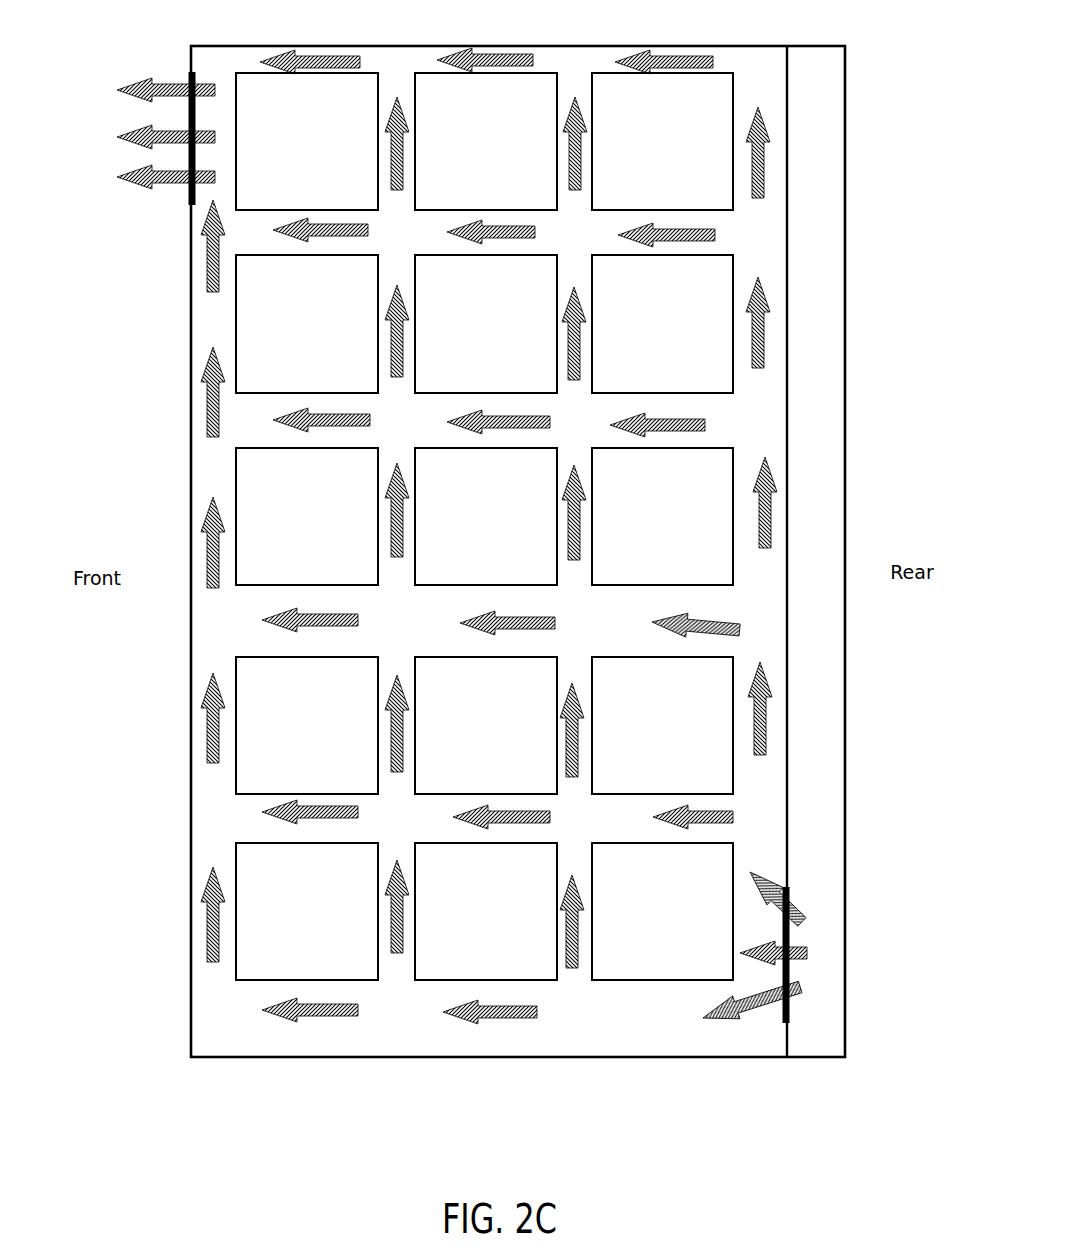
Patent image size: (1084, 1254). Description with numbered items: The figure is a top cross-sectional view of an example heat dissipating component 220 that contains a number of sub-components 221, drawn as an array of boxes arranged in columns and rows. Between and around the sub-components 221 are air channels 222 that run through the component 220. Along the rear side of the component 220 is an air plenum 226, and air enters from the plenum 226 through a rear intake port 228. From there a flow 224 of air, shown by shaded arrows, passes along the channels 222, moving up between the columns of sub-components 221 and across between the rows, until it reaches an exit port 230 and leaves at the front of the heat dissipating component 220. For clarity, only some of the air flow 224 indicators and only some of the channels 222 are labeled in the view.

The heat dissipating component 220 is at (238, 1057).
The sub-components 221 is at (484, 526).
The air channels 222 is at (215, 812).
The flow of air 224 is at (150, 90).
The air plenum 226 is at (809, 551).
The rear intake port 228 is at (790, 1003).
The exit port 230 is at (190, 198).